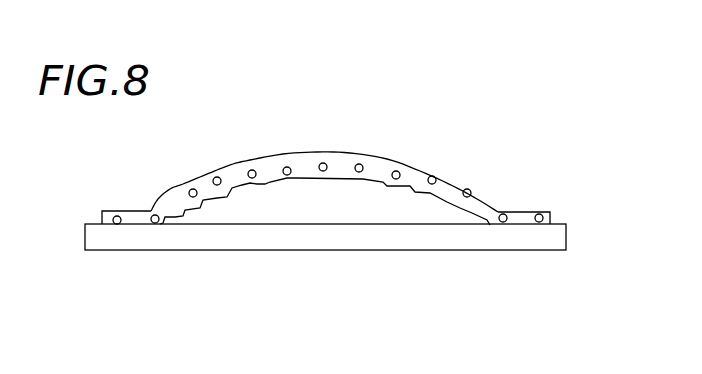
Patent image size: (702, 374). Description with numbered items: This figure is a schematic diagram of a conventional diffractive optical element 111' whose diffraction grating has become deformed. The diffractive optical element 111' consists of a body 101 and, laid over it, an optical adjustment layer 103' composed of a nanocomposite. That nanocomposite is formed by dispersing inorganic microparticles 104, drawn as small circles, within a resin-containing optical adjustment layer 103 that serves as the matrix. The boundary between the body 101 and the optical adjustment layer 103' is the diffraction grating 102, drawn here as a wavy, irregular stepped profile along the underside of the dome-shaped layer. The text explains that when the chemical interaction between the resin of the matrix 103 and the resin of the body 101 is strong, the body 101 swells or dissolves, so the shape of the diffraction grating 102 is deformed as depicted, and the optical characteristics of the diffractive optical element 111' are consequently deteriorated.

The body 101 is at (188, 236).
The diffraction grating 102 is at (257, 187).
The optical adjustment layer 103 is at (324, 140).
The optical adjustment layer 103' is at (334, 121).
The inorganic microparticles 104 is at (472, 187).
The diffractive optical element 111' is at (372, 186).